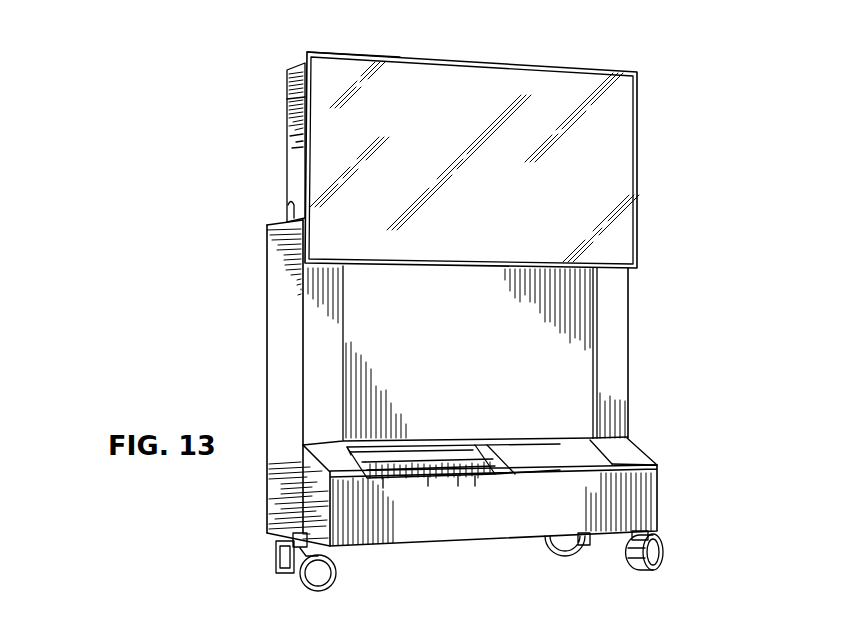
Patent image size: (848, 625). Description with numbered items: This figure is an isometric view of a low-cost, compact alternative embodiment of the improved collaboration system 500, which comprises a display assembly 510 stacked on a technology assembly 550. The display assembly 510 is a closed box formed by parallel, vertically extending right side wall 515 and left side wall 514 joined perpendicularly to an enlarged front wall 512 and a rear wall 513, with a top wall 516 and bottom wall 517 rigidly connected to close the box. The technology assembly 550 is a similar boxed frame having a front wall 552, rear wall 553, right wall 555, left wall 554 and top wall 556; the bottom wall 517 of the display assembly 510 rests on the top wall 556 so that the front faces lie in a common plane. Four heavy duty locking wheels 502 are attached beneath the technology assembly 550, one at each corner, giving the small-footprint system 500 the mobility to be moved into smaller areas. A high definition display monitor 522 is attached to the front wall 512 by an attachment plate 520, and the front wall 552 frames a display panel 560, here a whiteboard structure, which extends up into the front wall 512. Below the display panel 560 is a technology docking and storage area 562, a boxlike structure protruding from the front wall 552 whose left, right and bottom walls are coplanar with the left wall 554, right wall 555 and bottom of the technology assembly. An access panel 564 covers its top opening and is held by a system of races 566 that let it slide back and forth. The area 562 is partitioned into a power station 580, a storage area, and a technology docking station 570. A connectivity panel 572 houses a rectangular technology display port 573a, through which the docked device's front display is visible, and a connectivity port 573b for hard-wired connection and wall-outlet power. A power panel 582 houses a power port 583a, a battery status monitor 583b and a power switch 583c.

The improved collaboration system 500 is at (757, 153).
The heavy duty locking wheel 502 is at (668, 553).
The display assembly 510 is at (170, 134).
The front wall 512 is at (290, 98).
The rear wall 513 is at (290, 120).
The left side wall 514 is at (298, 148).
The right side wall 515 is at (637, 193).
The top wall 516 is at (405, 58).
The bottom wall 517 is at (291, 220).
The attachment plate 520 is at (590, 67).
The high definition display monitor 522 is at (548, 236).
The technology assembly 550 is at (162, 350).
The front wall 552 is at (610, 345).
The rear wall 553 is at (267, 290).
The left wall 554 is at (274, 337).
The right wall 555 is at (630, 316).
The top wall 556 is at (275, 224).
The display panel 560 is at (577, 300).
The technology docking and storage area 562 is at (598, 442).
The access panel 564 is at (627, 438).
The system of races 566 is at (623, 461).
The technology docking station 570 is at (398, 445).
The connectivity panel 572 is at (440, 462).
The technology display port 573a is at (468, 472).
The connectivity port 573b is at (345, 455).
The power station 580 is at (327, 474).
The power panel 582 is at (458, 483).
The power port 583a is at (475, 485).
The battery status monitor 583b is at (428, 482).
The power switch 583c is at (383, 480).